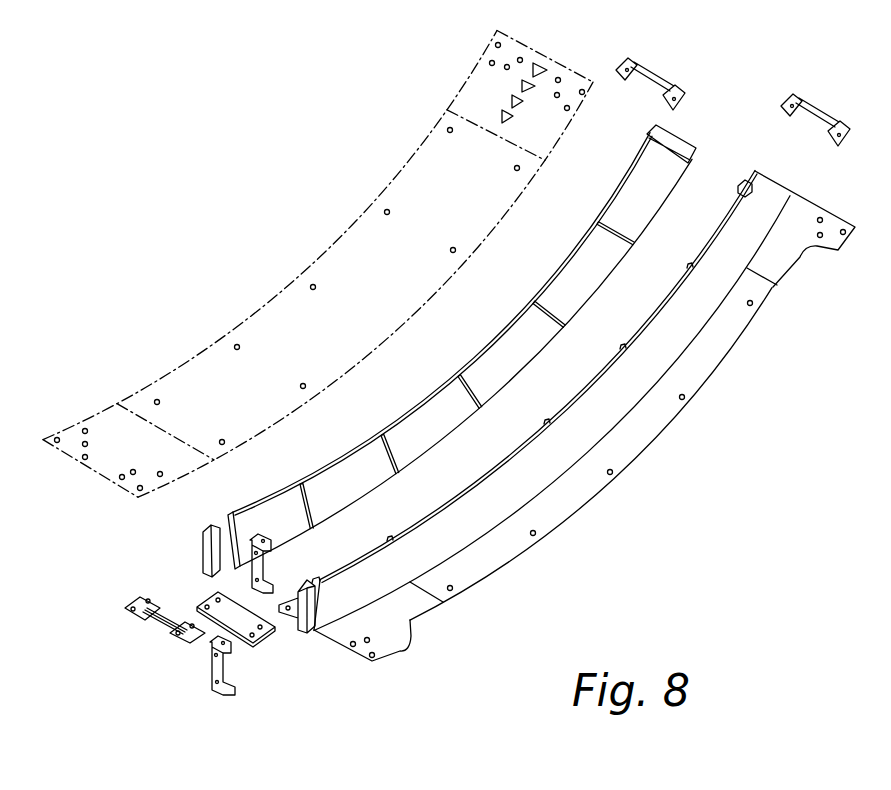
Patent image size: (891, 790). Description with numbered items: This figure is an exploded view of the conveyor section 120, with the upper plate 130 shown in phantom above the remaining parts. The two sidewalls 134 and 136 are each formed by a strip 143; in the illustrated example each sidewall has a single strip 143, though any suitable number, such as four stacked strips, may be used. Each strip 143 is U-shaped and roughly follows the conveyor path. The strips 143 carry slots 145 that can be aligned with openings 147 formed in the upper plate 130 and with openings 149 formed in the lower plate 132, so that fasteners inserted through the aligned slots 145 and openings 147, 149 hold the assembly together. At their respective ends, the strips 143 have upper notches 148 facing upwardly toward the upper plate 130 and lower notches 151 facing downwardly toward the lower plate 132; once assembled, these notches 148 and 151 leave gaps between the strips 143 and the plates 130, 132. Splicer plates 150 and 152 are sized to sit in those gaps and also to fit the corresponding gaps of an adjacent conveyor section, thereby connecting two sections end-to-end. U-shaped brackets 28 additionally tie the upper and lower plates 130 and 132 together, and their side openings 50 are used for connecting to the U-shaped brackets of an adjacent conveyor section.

The U-shaped bracket 28 is at (650, 62).
The side opening 50 is at (250, 582).
The conveyor section 120 is at (597, 551).
The upper plate 130 is at (352, 240).
The lower plate 132 is at (467, 568).
The sidewall 134 is at (583, 263).
The sidewall 136 is at (690, 322).
The strip 143 is at (510, 352).
The slot 145 is at (413, 433).
The opening 147 is at (237, 344).
The upper notch 148 is at (213, 527).
The opening 149 is at (610, 472).
The splicer plate 150 is at (163, 625).
The lower notch 151 is at (693, 158).
The splicer plate 152 is at (210, 600).